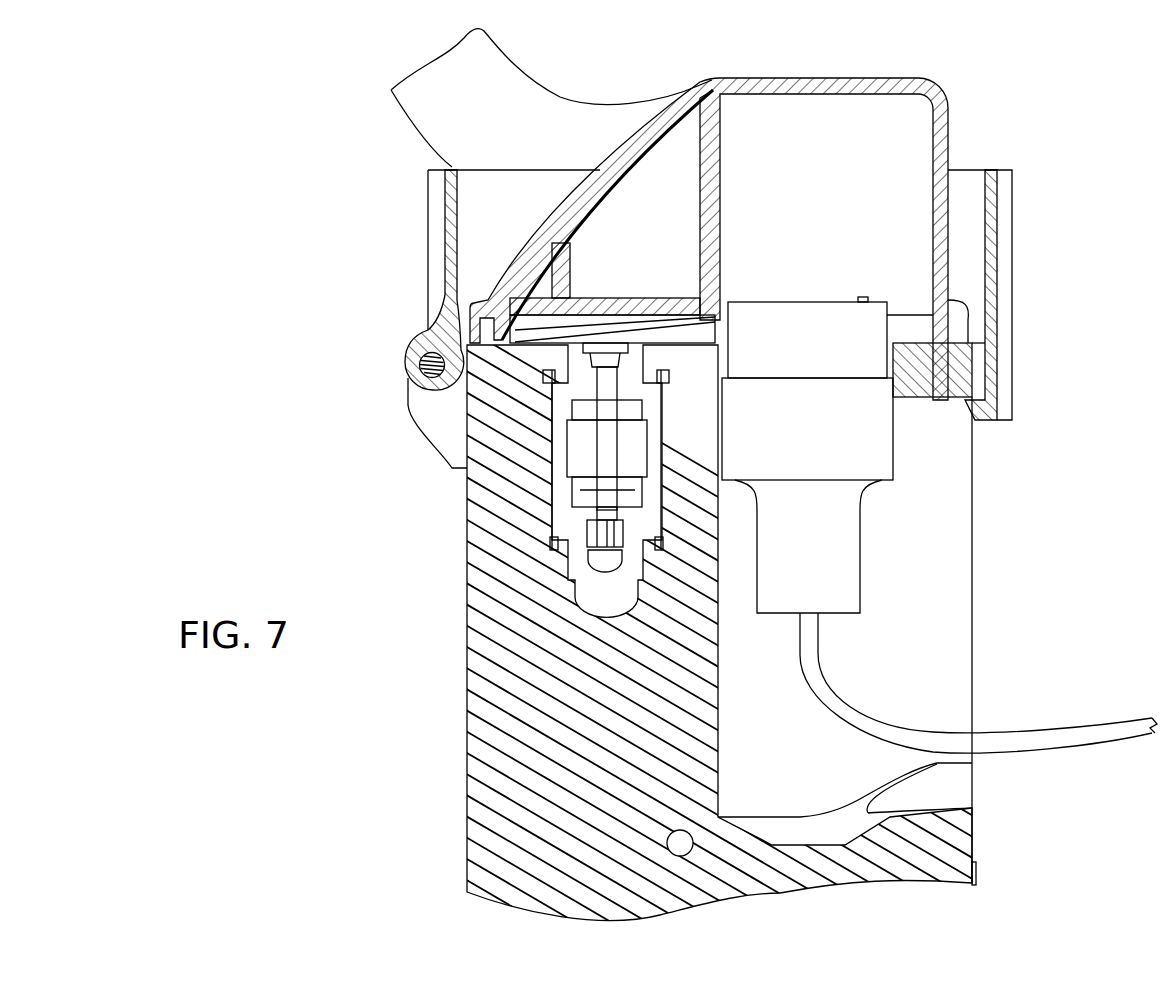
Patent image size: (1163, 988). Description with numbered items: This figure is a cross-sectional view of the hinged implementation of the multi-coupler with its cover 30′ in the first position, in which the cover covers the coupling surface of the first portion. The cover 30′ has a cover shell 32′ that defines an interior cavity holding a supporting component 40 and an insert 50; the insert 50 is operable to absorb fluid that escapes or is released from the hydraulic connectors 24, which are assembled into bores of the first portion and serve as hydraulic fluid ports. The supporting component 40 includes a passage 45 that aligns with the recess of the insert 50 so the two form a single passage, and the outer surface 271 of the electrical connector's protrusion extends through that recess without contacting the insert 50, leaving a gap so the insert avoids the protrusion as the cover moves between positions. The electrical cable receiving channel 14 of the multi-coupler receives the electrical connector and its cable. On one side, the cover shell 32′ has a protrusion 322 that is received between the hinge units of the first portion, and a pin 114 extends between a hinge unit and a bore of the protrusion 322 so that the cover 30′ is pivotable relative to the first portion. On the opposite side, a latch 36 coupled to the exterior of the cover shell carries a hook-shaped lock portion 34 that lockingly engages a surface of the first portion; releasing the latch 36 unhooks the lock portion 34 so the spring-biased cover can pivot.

The electrical cable receiving channel 14 is at (932, 631).
The hydraulic connector 24 is at (587, 380).
The insert 50 is at (617, 328).
The pin 114 is at (408, 380).
The protrusion 322 is at (415, 342).
The cover shell 32′ is at (790, 63).
The supporting component 40 is at (676, 226).
The passage 45 is at (829, 166).
The latch 36 is at (1012, 283).
The lock portion 34 is at (1012, 405).
The cover 30′ is at (1034, 117).
The outer surface 271 is at (836, 351).